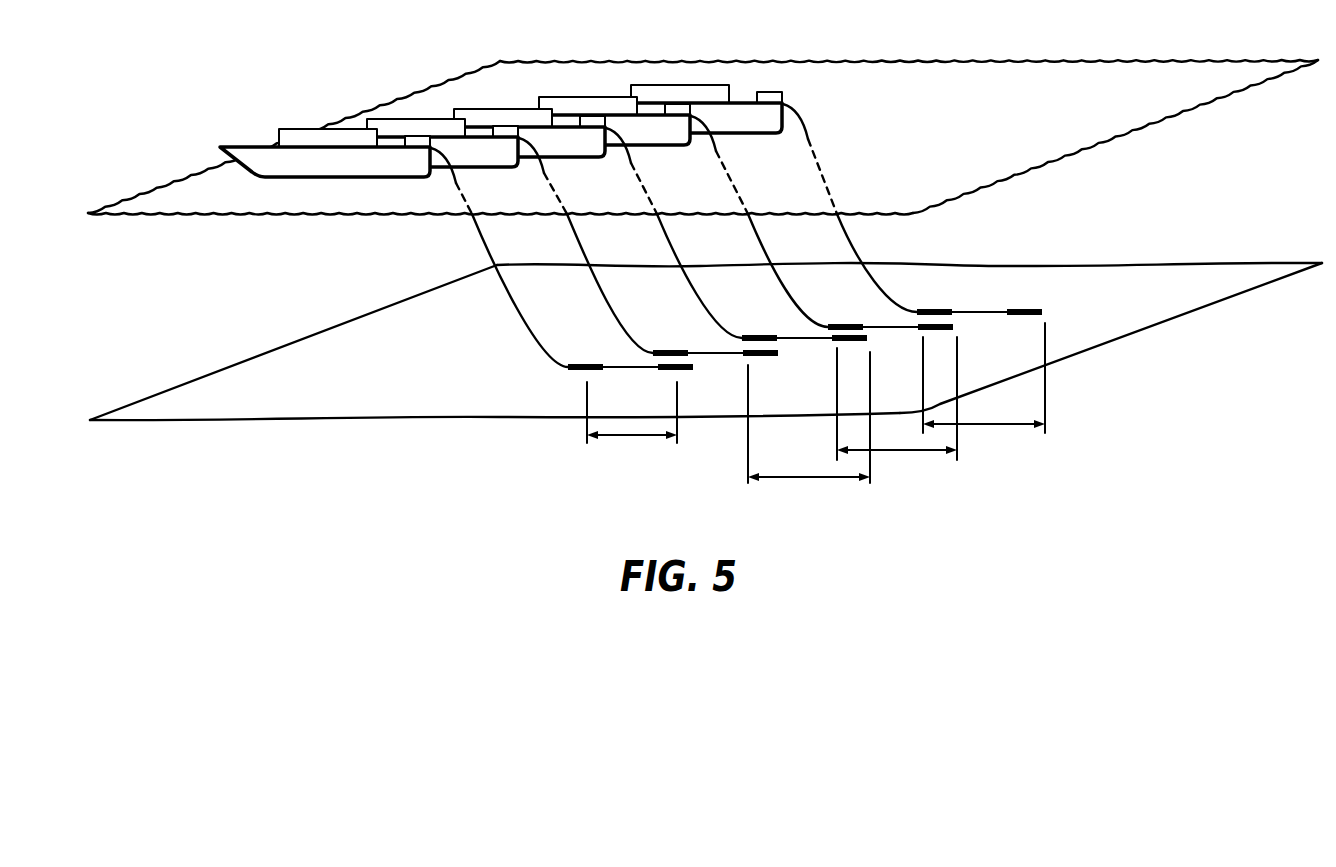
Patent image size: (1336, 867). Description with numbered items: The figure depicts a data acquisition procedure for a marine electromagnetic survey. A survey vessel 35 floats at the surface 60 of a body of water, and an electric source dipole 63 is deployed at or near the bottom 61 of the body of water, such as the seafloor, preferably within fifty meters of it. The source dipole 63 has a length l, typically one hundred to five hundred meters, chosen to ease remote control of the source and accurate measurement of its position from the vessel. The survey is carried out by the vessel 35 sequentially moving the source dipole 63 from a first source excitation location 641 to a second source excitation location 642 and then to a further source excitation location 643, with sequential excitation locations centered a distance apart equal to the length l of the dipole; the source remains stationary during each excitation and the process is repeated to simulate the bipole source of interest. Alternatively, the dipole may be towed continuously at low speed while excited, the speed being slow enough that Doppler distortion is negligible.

The survey vessel 35 is at (252, 113).
The surface 60 is at (1028, 72).
The bottom 61 is at (223, 380).
The electric source dipole 63 is at (560, 382).
The first source excitation location 641 is at (987, 430).
The second source excitation location 642 is at (893, 453).
The source excitation location 643 is at (808, 480).
The length of source dipole I is at (632, 437).